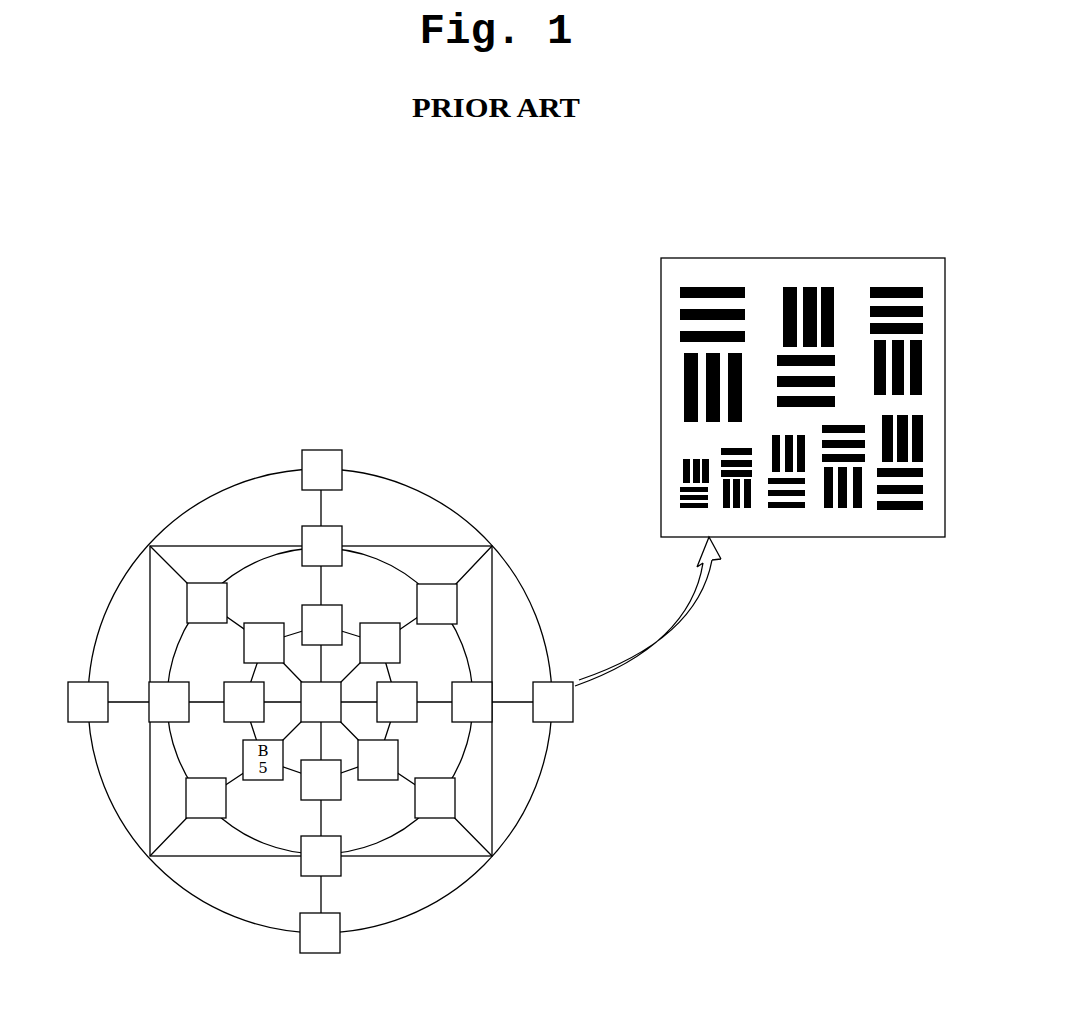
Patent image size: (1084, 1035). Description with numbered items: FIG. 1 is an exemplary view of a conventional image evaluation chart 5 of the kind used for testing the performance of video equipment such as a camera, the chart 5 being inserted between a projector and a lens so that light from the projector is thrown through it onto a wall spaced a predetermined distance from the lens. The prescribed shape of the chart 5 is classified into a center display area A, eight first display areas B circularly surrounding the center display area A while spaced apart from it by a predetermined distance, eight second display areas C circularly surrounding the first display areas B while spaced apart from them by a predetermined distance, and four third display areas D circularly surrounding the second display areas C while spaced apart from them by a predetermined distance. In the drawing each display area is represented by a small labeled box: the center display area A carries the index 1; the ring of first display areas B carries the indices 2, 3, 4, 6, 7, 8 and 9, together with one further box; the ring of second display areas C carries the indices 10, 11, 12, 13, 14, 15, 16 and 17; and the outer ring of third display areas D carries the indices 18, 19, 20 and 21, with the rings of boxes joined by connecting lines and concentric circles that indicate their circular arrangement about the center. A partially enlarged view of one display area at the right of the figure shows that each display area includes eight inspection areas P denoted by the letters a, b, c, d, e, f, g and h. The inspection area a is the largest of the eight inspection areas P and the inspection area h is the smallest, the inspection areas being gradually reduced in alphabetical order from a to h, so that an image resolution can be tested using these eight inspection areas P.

The chart 5 is at (540, 789).
The center display area A is at (251, 580).
The first display areas B is at (385, 546).
The second display areas C is at (263, 889).
The third display areas D is at (356, 941).
The inspection areas P is at (798, 510).
The projector 1 is at (321, 702).
The wall 2 is at (397, 702).
The lens 3 is at (378, 760).
The chip B4 4 is at (321, 780).
The chip B6 6 is at (244, 702).
The chip B7 7 is at (264, 643).
The chip B8 8 is at (322, 625).
The chip B9 9 is at (380, 643).
The chip C10 10 is at (472, 702).
The chip C11 11 is at (435, 798).
The chip C12 12 is at (321, 856).
The chip C13 13 is at (206, 798).
The chip C14 14 is at (169, 702).
The chip C15 15 is at (207, 603).
The chip C16 16 is at (322, 546).
The chip C17 17 is at (437, 604).
The chip D18 18 is at (553, 702).
The chip D19 19 is at (320, 933).
The chip D20 20 is at (88, 702).
The chip D21 21 is at (322, 470).